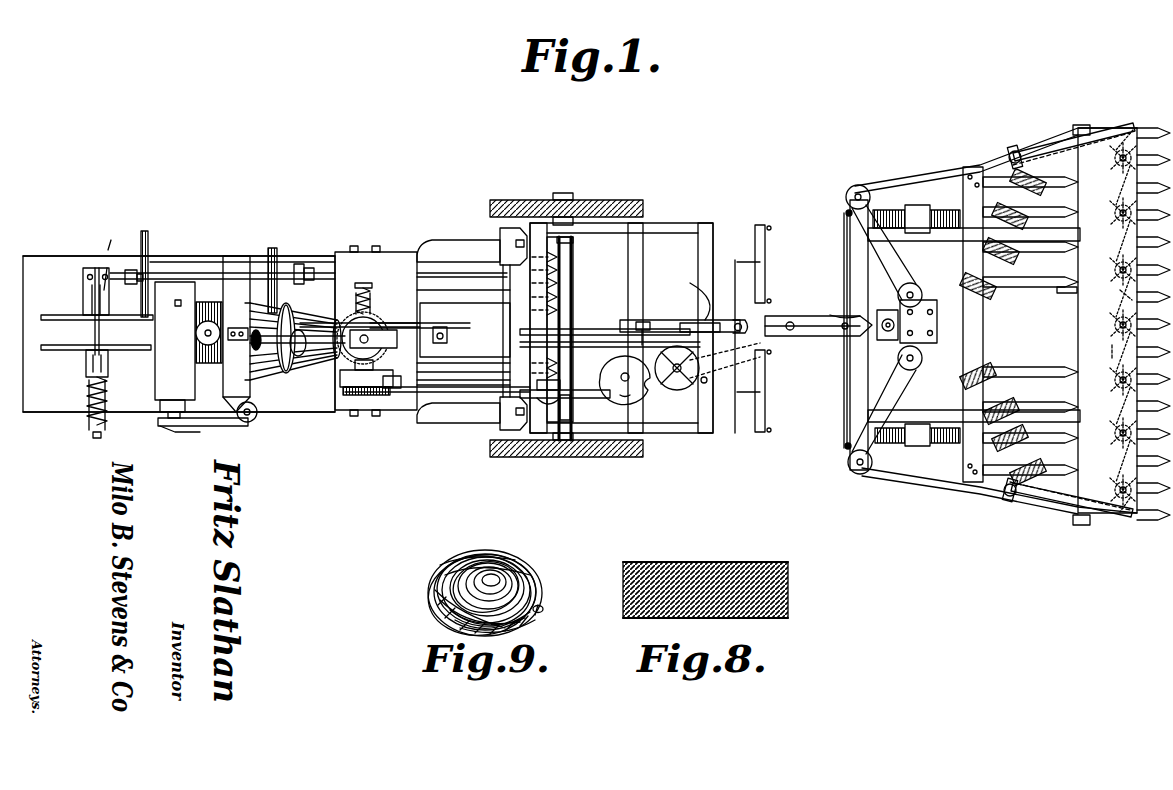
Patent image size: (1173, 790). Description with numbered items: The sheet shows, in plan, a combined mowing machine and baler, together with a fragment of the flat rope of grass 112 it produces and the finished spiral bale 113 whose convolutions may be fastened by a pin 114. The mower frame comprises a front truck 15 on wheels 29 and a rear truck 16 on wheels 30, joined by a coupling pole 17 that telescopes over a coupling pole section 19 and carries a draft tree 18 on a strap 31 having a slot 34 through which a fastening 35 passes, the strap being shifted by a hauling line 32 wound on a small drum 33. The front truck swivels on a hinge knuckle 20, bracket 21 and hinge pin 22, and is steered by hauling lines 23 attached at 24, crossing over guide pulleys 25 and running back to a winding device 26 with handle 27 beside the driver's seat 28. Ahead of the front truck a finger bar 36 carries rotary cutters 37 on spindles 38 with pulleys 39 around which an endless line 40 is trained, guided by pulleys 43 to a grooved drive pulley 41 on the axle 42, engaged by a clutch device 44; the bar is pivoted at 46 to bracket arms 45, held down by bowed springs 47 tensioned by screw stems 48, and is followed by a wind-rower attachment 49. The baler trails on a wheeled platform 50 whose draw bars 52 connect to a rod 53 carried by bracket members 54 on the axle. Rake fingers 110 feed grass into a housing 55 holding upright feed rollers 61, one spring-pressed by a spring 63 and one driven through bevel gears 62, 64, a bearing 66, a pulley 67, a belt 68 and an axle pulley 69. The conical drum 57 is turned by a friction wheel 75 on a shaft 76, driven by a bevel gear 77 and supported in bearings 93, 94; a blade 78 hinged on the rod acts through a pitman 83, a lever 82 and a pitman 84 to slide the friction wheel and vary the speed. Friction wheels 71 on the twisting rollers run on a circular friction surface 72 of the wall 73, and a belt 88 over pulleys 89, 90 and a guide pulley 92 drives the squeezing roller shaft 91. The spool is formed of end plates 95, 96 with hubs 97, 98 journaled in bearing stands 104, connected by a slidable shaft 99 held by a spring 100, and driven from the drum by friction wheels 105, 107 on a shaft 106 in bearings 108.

In FIG. 1, the front truck 15 is at (983, 322).
In FIG. 1, the rear truck 16 is at (694, 428).
In FIG. 1, the coupling pole 17 is at (772, 315).
In FIG. 1, the draft tree 18 is at (748, 262).
In FIG. 1, the coupling pole section 19 is at (655, 320).
In FIG. 1, the hinge knuckle 20 is at (930, 212).
In FIG. 1, the bracket 21 is at (880, 335).
In FIG. 1, the hinge pin 22 is at (890, 318).
In FIG. 1, the hauling lines 23 is at (843, 256).
In FIG. 1, the connection of hauling lines 24 is at (845, 212).
In FIG. 1, the guide pulleys 25 is at (795, 316).
In FIG. 1, the winding device 26 is at (640, 388).
In FIG. 1, the operating handle 27 is at (688, 385).
In FIG. 1, the driver's seat 28 is at (640, 386).
In FIG. 1, the wheels 29 is at (945, 443).
In FIG. 1, the wheels 30 is at (640, 202).
In FIG. 1, the strap 31 is at (730, 320).
In FIG. 1, the hauling line 32 is at (668, 328).
In FIG. 1, the small drum or pulley 33 is at (645, 320).
In FIG. 1, the longitudinal slot 34 is at (708, 382).
In FIG. 1, the fastening 35 is at (691, 292).
In FIG. 1, the finger bar 36 is at (1078, 322).
In FIG. 1, the rotary cutters 37 is at (1110, 280).
In FIG. 1, the vertical spindles 38 is at (1115, 385).
In FIG. 1, the pulleys 39 is at (1075, 349).
In FIG. 1, the endless line 40 is at (900, 478).
In FIG. 1, the grooved drive pulley 41 is at (588, 326).
In FIG. 1, the axle 42 is at (575, 265).
In FIG. 1, the guide pulleys 43 is at (868, 192).
In FIG. 1, the clutch device 44 is at (576, 420).
In FIG. 1, the bracket arms 45 is at (1002, 150).
In FIG. 1, the pivotal connection 46 is at (1084, 124).
In FIG. 1, the bowed spring 47 is at (1050, 140).
In FIG. 1, the screw stems 48 is at (1085, 145).
In FIG. 1, the wind-rower attachment 49 is at (1034, 280).
In FIG. 1, the wheeled platform 50 is at (243, 262).
In FIG. 1, the draw bars 52 is at (445, 240).
In FIG. 1, the rod 53 is at (510, 262).
In FIG. 1, the bracket members 54 is at (572, 245).
In FIG. 1, the housing 55 is at (370, 250).
In FIG. 1, the conical drum 57 is at (326, 360).
In FIG. 1, the upright rollers 61 is at (350, 388).
In FIG. 1, the bevel gear 62 is at (374, 310).
In FIG. 1, the spring 63 is at (375, 290).
In FIG. 1, the bevel gear 64 is at (365, 384).
In FIG. 1, the bearing 66 is at (362, 395).
In FIG. 1, the pulley 67 is at (366, 391).
In FIG. 1, the belt 68 is at (396, 392).
In FIG. 1, the pulley 69 is at (548, 398).
In FIG. 1, the friction wheels 71 is at (196, 342).
In FIG. 1, the circular friction surface 72 is at (196, 300).
In FIG. 1, the wall 73 is at (165, 388).
In FIG. 1, the friction wheel 75 is at (290, 366).
In FIG. 1, the shaft 76 is at (266, 366).
In FIG. 1, the bevel gear 77 is at (335, 323).
In FIG. 1, the blade 78 is at (463, 329).
In FIG. 1, the lever 82 is at (420, 316).
In FIG. 1, the pitman 83 is at (451, 330).
In FIG. 1, the pitman 84 is at (350, 318).
In FIG. 1, the belt 88 is at (196, 430).
In FIG. 1, the pulley 89 is at (245, 330).
In FIG. 1, the pulley 90 is at (170, 427).
In FIG. 1, the shaft 91 is at (175, 428).
In FIG. 1, the guide pulley 92 is at (248, 423).
In FIG. 1, the bearing 93 is at (244, 342).
In FIG. 1, the bearing 94 is at (305, 343).
In FIG. 1, the end plate 95 is at (90, 298).
In FIG. 1, the end plate 96 is at (50, 350).
In FIG. 1, the hub 97 is at (82, 294).
In FIG. 1, the hub 98 is at (108, 365).
In FIG. 1, the shaft 99 is at (99, 443).
In FIG. 1, the spring 100 is at (90, 425).
In FIG. 1, the bearing stands 104 is at (103, 268).
In FIG. 1, the friction wheel 105 is at (275, 260).
In FIG. 1, the shaft 106 is at (205, 262).
In FIG. 1, the friction wheel 107 is at (150, 240).
In FIG. 1, the bearings 108 is at (130, 270).
In FIG. 1, the rake fingers 110 is at (520, 383).
In FIG. 8, the rope of grass 112 is at (724, 560).
In FIG. 9, the bale 113 is at (430, 616).
In FIG. 9, the pin 114 is at (545, 610).